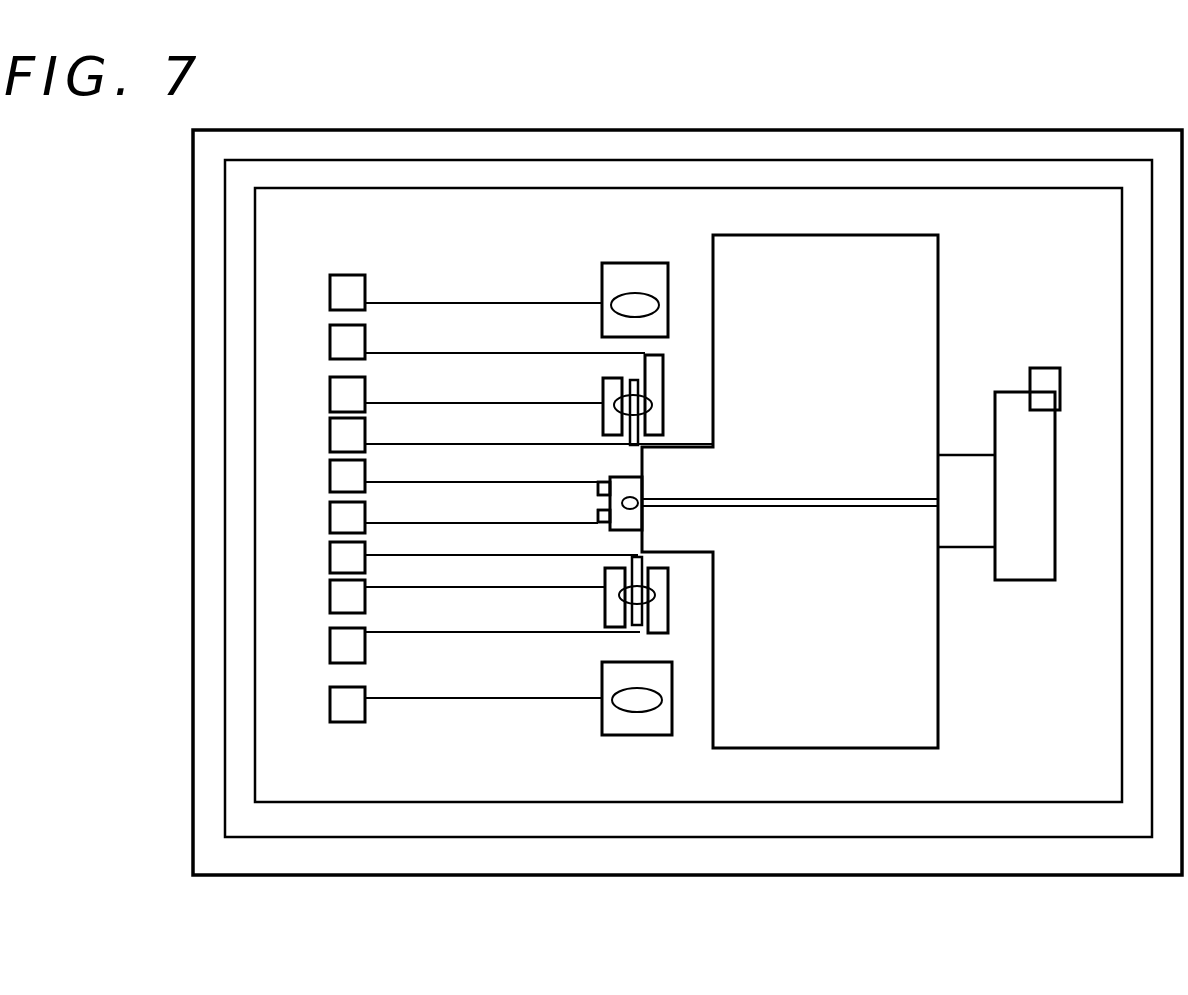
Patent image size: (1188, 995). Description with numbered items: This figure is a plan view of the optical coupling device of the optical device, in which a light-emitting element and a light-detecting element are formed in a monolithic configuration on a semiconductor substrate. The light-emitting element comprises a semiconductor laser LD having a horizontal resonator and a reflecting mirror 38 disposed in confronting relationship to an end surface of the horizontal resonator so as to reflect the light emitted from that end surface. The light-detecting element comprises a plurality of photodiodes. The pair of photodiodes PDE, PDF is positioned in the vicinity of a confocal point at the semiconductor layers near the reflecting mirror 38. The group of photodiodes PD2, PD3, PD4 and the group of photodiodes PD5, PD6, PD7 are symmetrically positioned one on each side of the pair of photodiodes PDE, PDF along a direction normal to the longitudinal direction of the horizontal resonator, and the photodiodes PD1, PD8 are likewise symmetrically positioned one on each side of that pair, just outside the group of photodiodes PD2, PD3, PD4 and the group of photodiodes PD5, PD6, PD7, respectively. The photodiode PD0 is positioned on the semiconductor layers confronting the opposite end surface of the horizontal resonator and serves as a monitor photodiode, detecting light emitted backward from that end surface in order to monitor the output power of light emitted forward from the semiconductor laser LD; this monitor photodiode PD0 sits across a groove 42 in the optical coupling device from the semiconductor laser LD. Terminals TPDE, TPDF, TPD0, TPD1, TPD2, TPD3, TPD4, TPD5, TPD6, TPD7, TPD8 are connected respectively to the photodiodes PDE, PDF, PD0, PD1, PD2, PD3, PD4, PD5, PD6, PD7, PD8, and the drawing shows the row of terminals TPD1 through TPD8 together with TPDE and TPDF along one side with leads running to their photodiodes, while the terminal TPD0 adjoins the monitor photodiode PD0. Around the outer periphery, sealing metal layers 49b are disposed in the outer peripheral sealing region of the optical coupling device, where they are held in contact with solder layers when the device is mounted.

The sealing metal layer 49b is at (948, 818).
The semiconductor laser LD is at (839, 508).
The groove 42 is at (971, 470).
The reflecting mirror 38 is at (632, 518).
The monitor photodiode PD0 is at (1034, 560).
The terminal TPD0 is at (1048, 380).
The photodiode PD1 is at (630, 280).
The photodiode PD2 is at (663, 368).
The photodiode PD3 is at (660, 437).
The photodiode PD4 is at (603, 385).
The photodiode PD5 is at (640, 560).
The photodiode PD6 is at (605, 612).
The photodiode PD7 is at (660, 613).
The photodiode PD8 is at (627, 724).
The photodiode PDE is at (598, 487).
The photodiode PDF is at (598, 516).
The terminal TPD1 is at (431, 295).
The terminal TPD2 is at (453, 345).
The terminal TPD3 is at (432, 397).
The terminal TPD4 is at (487, 438).
The terminal TPDE is at (429, 479).
The terminal TPDF is at (429, 520).
The terminal TPD5 is at (449, 560).
The terminal TPD6 is at (433, 599).
The terminal TPD7 is at (450, 648).
The terminal TPD8 is at (431, 707).